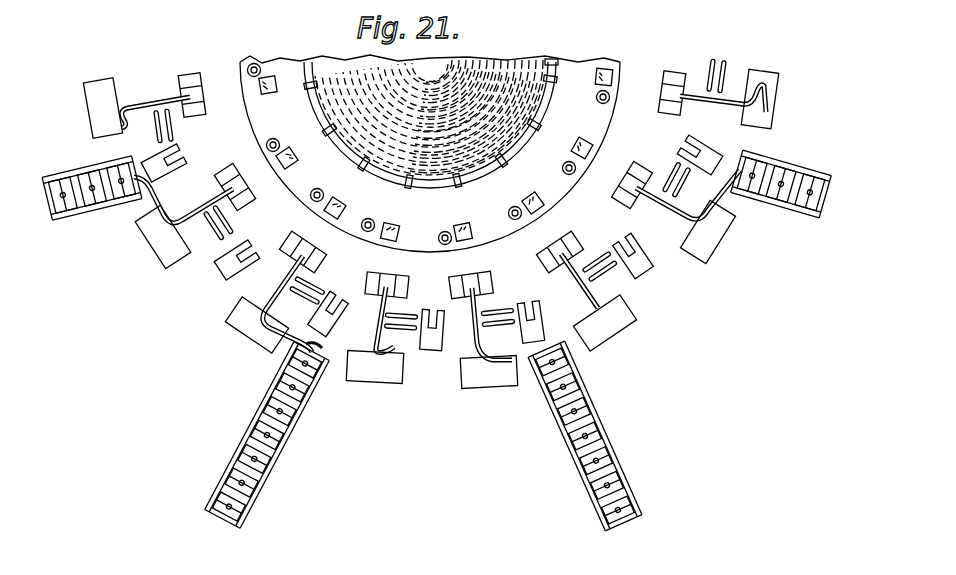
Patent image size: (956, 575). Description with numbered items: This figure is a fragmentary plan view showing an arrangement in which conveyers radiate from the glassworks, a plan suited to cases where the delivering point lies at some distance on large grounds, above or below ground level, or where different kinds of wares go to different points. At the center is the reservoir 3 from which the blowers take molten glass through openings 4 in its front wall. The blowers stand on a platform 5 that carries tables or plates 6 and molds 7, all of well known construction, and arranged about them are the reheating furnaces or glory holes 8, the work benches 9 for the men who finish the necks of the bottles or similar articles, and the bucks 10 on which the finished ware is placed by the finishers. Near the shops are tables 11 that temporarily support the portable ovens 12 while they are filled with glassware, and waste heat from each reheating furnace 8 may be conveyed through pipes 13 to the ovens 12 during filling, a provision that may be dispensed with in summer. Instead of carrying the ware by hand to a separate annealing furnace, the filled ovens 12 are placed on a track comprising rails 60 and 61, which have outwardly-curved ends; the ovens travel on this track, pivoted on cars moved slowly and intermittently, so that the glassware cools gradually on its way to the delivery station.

The reservoir 3 is at (429, 117).
The openings 4 is at (361, 164).
The platform 5 is at (606, 126).
The tables or plates 6 is at (346, 207).
The molds 7 is at (314, 190).
The reheating furnace 8 is at (293, 242).
The work benches 9 is at (337, 319).
The bucks 10 is at (314, 289).
The tables 11 is at (233, 318).
The portable ovens 12 is at (328, 353).
The pipes 13 is at (283, 284).
The rail 60 is at (210, 515).
The rail 61 is at (241, 525).